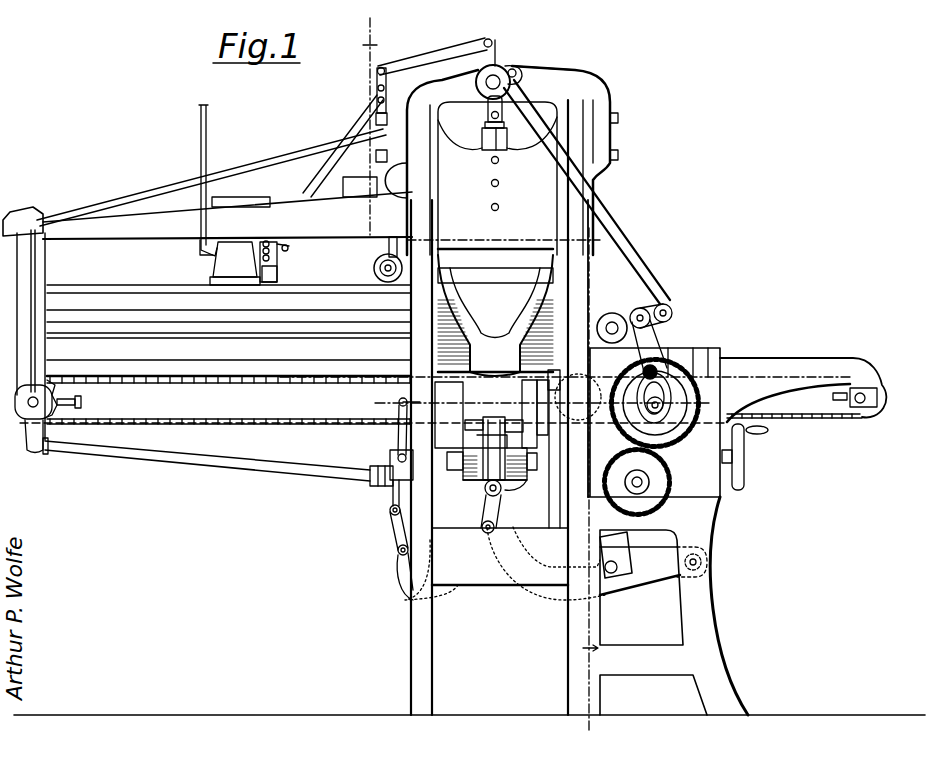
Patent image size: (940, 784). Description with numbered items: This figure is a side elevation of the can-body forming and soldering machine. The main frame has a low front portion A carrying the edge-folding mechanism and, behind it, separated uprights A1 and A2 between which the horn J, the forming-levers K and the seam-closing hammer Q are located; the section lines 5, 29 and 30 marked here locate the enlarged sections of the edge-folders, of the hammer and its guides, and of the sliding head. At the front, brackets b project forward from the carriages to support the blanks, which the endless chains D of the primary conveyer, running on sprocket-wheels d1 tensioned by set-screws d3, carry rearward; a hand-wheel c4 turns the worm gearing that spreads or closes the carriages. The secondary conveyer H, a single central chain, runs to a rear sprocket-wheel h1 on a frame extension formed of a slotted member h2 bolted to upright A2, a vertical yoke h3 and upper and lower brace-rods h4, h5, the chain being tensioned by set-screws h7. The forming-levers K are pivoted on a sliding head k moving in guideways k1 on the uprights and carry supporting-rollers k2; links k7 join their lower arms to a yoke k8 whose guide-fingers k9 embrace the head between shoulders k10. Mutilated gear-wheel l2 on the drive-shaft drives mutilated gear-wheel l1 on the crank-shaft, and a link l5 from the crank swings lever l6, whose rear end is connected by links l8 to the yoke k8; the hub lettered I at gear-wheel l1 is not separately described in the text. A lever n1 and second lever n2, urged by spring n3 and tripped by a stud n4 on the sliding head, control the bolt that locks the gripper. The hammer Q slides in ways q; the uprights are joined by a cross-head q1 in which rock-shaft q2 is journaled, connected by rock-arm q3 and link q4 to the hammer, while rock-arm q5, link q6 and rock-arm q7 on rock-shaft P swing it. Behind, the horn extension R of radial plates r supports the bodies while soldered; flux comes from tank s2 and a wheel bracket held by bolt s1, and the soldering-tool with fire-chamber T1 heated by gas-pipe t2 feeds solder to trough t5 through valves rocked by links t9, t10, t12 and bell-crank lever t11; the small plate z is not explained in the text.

The low front portion of main frame A is at (706, 590).
The front upright frame member A1 is at (530, 643).
The rear upright frame member A2 is at (380, 629).
The section line 5 5 is at (591, 488).
The section line 29 29 is at (397, 240).
The section line 30 30 is at (535, 397).
The hammer Q is at (501, 160).
The ways q is at (470, 172).
The cross-head q1 is at (562, 75).
The rock-shaft q2 is at (498, 70).
The rock-arm q3 is at (486, 110).
The link q4 is at (482, 145).
The rock-arm q5 is at (518, 70).
The link q6 is at (610, 190).
The rock-arm q7 is at (668, 306).
The rock-shaft P is at (606, 320).
The lever n1 is at (360, 505).
The second lever n2 is at (660, 340).
The spring n3 is at (660, 372).
The stud n4 is at (424, 473).
The supporting arm or bracket b is at (583, 379).
The endless chains of primary conveyer D is at (794, 414).
The sprocket-wheels d1 is at (872, 412).
The set-screws d3 is at (829, 397).
The hand-wheel c4 is at (745, 463).
The pinion I is at (650, 482).
The mutilated gear-wheel l1 is at (637, 482).
The mutilated gear-wheel l2 is at (676, 450).
The link l5 is at (616, 555).
The lever l6 is at (540, 600).
The links l8 is at (497, 513).
The horn J is at (495, 315).
The forming-levers K is at (495, 360).
The sliding support or head k is at (497, 409).
The guideways k1 is at (556, 500).
The supporting-roller k2 is at (508, 280).
The links k7 is at (494, 433).
The yoke k8 is at (480, 492).
The guide-fingers k9 is at (512, 438).
The shoulders k10 is at (398, 428).
The gas-pipe t2 is at (194, 250).
The trough t5 is at (277, 277).
The link t9 is at (277, 253).
The link t10 is at (340, 146).
The bell-crank lever t11 is at (376, 86).
The link t12 is at (435, 55).
The fire-chamber T1 is at (235, 263).
The bolt s1 is at (382, 268).
The tank s2 is at (360, 187).
The plate z is at (234, 180).
The horn extension R is at (229, 311).
The radial plates r is at (229, 350).
The secondary conveyer H is at (229, 400).
The sprocket-wheel h1 is at (27, 425).
The longitudinal slotted or divided member h2 is at (207, 215).
The vertical yoke h3 is at (45, 262).
The upper brace-rod h4 is at (170, 174).
The lower brace-rod h5 is at (215, 478).
The set-screws h7 is at (82, 403).